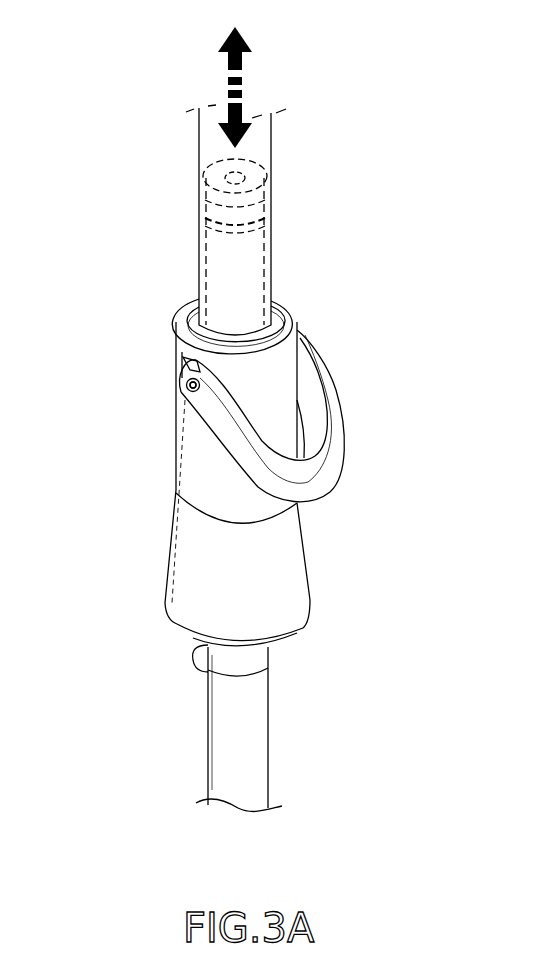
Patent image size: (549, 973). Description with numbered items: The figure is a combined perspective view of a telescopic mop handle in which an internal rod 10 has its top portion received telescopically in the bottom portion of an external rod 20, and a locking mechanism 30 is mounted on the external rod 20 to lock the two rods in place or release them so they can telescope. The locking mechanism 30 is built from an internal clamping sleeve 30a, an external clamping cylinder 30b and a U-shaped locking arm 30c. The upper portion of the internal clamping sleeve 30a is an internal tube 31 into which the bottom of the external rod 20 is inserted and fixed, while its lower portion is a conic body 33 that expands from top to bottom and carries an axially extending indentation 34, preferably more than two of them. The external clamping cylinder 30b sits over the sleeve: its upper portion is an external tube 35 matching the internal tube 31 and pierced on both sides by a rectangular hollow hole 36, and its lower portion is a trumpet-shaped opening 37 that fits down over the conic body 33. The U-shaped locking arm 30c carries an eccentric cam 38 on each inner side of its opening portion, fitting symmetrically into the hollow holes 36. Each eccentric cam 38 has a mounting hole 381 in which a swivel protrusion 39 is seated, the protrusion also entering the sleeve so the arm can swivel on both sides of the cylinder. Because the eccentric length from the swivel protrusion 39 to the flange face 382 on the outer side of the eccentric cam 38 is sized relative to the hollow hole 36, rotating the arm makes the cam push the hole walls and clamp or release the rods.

The internal rod 10 is at (245, 265).
The external rod 20 is at (273, 147).
The locking mechanism 30 is at (267, 453).
The internal clamping sleeve 30a is at (297, 311).
The external clamping cylinder 30b is at (283, 390).
The U-shaped locking arm 30c is at (330, 455).
The internal tube 31 is at (190, 300).
The conic body 33 is at (296, 636).
The indentation 34 is at (268, 668).
The external tube 35 is at (204, 472).
The hollow hole 36 is at (176, 327).
The trumpet-shaped opening 37 is at (200, 567).
The eccentric cam 38 is at (187, 383).
The swivel protrusion 39 is at (188, 389).
The mounting hole 381 is at (193, 385).
The flange face 382 is at (185, 362).